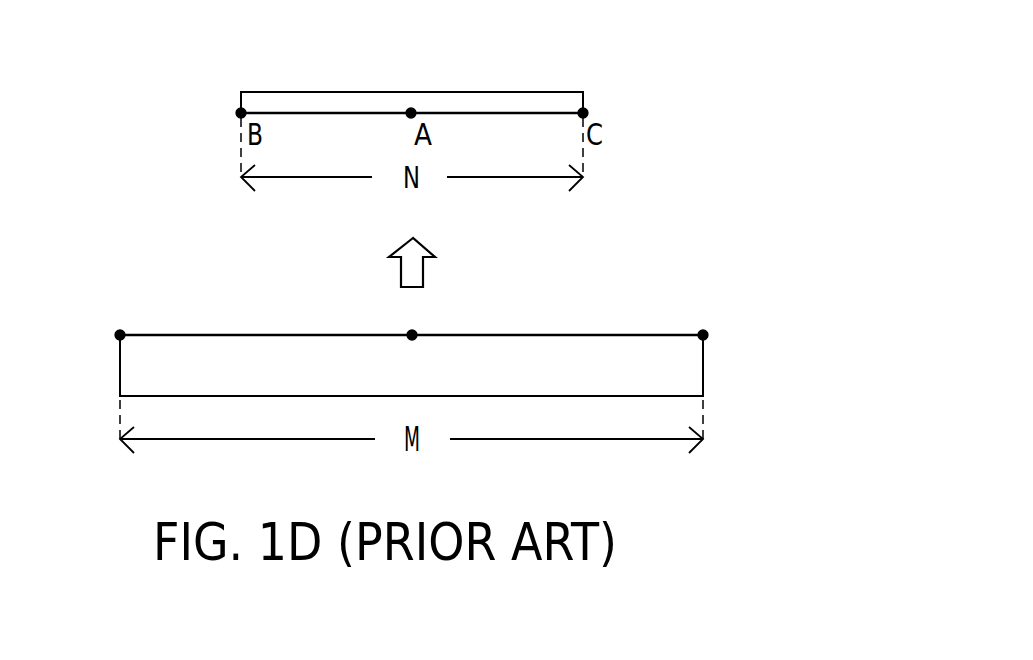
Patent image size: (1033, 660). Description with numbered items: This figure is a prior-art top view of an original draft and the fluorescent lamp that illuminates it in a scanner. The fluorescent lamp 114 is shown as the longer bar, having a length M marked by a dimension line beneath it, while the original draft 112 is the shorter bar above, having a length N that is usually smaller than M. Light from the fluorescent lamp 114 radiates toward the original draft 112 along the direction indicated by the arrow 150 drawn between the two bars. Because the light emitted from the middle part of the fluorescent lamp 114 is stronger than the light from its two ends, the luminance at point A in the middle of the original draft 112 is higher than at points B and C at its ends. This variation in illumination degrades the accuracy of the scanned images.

The original draft 112 is at (498, 104).
The fluorescent lamp 114 is at (569, 349).
The arrow 150 is at (410, 257).